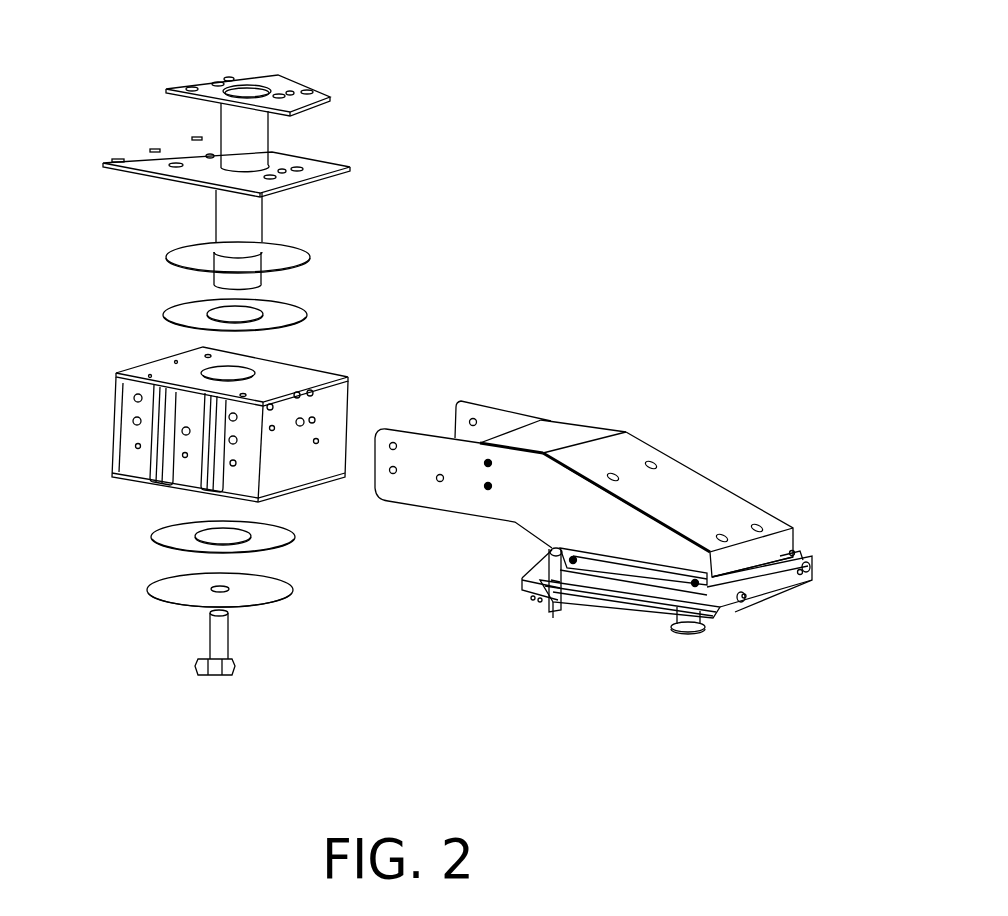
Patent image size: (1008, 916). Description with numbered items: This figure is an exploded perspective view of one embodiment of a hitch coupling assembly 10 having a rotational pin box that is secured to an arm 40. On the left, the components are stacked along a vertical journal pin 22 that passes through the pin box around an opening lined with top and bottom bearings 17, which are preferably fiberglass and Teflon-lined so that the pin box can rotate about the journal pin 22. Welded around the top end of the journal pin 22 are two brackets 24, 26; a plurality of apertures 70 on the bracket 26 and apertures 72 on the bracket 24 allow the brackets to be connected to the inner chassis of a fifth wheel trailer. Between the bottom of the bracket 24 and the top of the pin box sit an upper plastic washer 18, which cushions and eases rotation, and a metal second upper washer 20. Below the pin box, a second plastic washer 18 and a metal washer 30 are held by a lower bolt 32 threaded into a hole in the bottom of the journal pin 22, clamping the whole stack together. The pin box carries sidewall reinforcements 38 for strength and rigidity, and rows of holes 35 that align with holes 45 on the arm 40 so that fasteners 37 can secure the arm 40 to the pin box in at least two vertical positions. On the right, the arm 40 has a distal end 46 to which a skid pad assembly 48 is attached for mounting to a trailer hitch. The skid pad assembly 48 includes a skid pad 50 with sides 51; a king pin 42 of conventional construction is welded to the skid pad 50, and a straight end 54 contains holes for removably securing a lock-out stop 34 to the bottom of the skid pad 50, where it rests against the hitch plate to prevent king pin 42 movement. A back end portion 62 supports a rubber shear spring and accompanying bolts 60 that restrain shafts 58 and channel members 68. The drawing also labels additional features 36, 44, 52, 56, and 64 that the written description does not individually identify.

The hitch coupling assembly 10 is at (590, 214).
The bearings 17 is at (272, 424).
The upper washer 18 is at (285, 432).
The second upper washer 20 is at (293, 275).
The journal pin 22 is at (248, 227).
The bracket 24 is at (279, 181).
The bracket 26 is at (287, 110).
The washer 30 is at (262, 597).
The lower bolt 32 is at (262, 642).
The lock-out stop 34 is at (503, 636).
The holes 35 is at (135, 448).
The slots 36 is at (197, 137).
The fasteners 37 is at (137, 422).
The sidewall reinforcements 38 is at (210, 438).
The arm 40 is at (543, 446).
The king pin 42 is at (714, 643).
The mounting plate 44 is at (543, 384).
The holes 45 is at (440, 478).
The distal end 46 is at (682, 502).
The skid pad assembly 48 is at (774, 629).
The skid pad 50 is at (625, 625).
The sides 51 is at (630, 664).
The bracket 52 is at (792, 634).
The straight end 54 is at (523, 580).
The bracket 56 is at (516, 572).
The shafts 58 is at (800, 573).
The bolts 60 is at (743, 598).
The back end portion 62 is at (500, 616).
The plate 64 is at (647, 644).
The channel members 68 is at (613, 630).
The apertures 70 is at (218, 82).
The apertures 72 is at (212, 155).